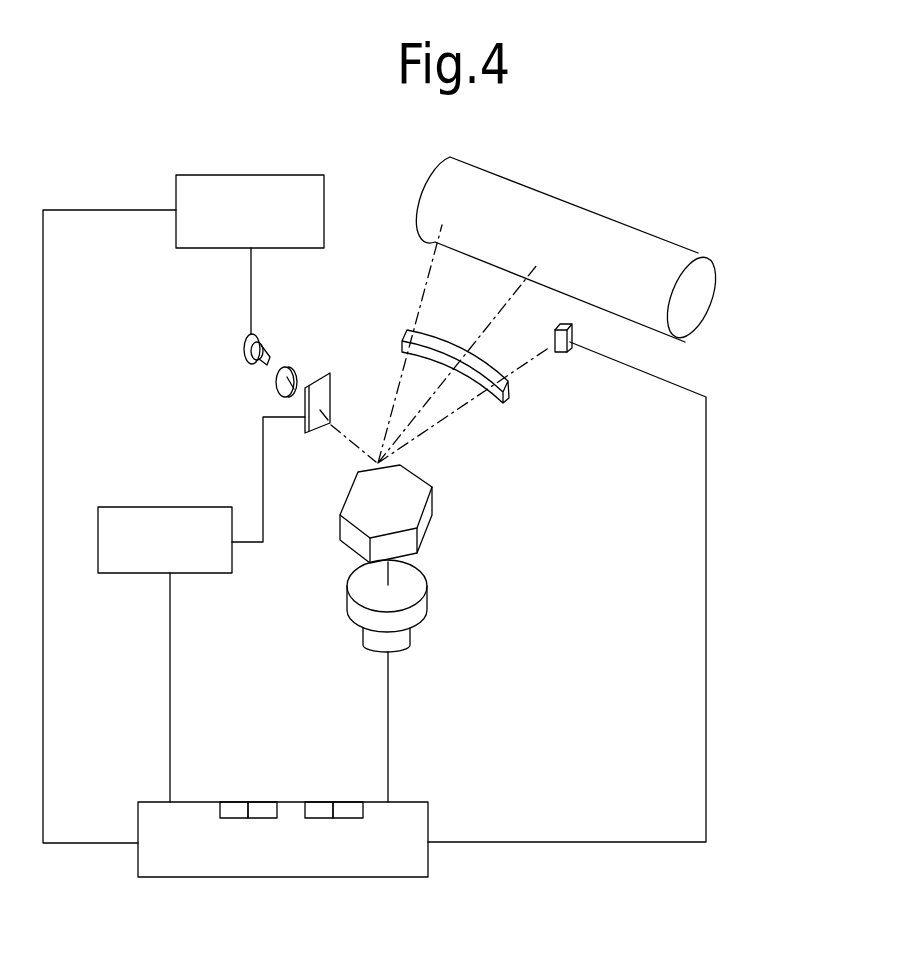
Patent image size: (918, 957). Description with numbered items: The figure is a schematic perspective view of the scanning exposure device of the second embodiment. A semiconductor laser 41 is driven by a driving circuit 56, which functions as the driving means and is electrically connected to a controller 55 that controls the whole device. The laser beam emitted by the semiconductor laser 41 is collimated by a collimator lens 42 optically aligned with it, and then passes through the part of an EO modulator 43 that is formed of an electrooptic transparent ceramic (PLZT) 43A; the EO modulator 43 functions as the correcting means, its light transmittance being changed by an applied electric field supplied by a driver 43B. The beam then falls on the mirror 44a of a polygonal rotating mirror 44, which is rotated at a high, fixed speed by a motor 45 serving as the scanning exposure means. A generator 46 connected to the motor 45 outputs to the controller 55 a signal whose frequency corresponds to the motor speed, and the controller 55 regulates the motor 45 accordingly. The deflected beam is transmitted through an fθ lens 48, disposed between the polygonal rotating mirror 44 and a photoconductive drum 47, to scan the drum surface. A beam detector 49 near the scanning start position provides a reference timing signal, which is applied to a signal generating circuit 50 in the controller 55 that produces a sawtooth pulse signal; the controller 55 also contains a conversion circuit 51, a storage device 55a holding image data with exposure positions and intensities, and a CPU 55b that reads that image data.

The driving circuit 56 is at (271, 181).
The semiconductor laser 41 is at (245, 342).
The collimator lens 42 is at (275, 386).
The EO modulator 43 is at (195, 520).
The electrooptic transparent ceramic (PLZT) 43A is at (305, 405).
The driver 43B is at (119, 573).
The polygonal rotating mirror 44 is at (431, 521).
The mirror 44a is at (430, 512).
The motor 45 is at (428, 593).
The generator 46 is at (412, 640).
The photoconductive drum 47 is at (668, 237).
The fθ lens 48 is at (503, 400).
The beam detector 49 is at (572, 352).
The signal generating circuit 50 is at (234, 802).
The conversion circuit 51 is at (270, 802).
The controller 55 is at (305, 809).
The storage device 55a is at (318, 802).
The CPU 55b is at (340, 802).